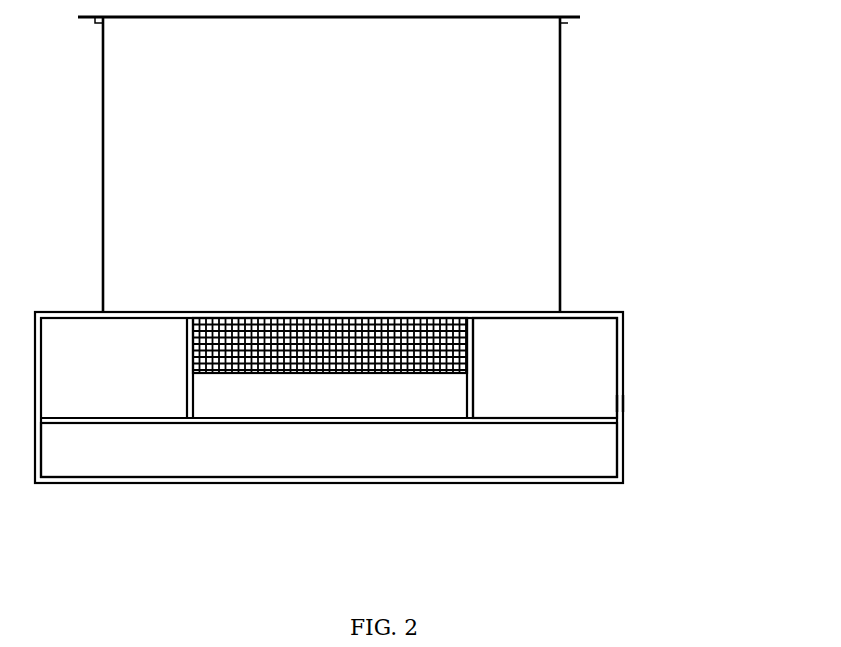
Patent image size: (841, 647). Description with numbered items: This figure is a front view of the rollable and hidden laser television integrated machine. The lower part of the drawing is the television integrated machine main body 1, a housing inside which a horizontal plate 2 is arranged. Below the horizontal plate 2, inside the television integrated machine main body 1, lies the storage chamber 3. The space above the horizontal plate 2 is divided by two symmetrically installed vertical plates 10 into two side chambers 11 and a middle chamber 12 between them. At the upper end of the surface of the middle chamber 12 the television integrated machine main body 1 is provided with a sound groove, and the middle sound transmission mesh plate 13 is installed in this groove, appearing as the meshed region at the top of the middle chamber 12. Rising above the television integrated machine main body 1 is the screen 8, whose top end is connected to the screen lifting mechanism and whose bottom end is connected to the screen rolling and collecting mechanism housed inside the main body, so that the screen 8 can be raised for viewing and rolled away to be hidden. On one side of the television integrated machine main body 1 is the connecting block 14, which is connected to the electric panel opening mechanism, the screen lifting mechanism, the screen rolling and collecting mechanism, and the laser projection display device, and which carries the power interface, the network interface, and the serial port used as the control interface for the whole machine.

The television integrated machine main body 1 is at (627, 352).
The horizontal plate 2 is at (250, 425).
The storage chamber 3 is at (443, 455).
The screen 8 is at (560, 173).
The vertical plates 10 is at (183, 390).
The side chambers 11 is at (560, 353).
The middle chamber 12 is at (447, 383).
The middle sound transmission mesh plate 13 is at (310, 373).
The connecting block 14 is at (623, 395).